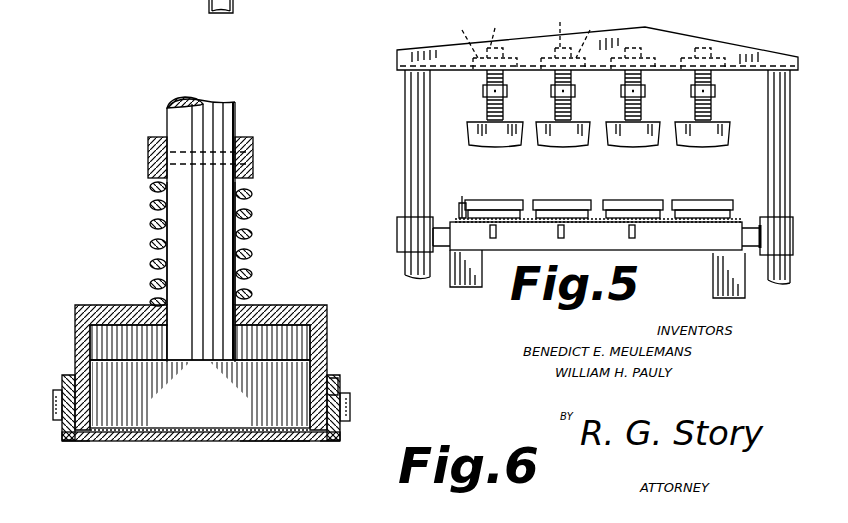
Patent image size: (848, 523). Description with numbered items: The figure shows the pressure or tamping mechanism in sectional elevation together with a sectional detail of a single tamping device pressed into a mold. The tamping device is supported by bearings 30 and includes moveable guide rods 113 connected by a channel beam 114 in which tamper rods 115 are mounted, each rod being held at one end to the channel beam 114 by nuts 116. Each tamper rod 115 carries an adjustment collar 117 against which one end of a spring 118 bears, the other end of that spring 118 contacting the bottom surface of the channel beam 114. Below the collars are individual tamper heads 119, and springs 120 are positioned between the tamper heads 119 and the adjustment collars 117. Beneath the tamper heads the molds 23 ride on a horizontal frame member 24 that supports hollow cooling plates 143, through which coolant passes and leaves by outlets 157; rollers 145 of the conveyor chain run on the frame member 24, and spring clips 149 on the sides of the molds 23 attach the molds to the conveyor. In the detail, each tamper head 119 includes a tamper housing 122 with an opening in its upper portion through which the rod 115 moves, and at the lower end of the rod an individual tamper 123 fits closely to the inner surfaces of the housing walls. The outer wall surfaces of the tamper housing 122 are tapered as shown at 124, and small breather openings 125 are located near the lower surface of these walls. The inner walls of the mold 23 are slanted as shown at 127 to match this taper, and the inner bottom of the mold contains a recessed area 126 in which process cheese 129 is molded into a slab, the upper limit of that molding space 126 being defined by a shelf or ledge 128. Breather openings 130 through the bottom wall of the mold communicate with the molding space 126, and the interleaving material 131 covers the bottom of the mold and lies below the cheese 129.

In FIG. 6, the mold 23 is at (341, 434).
In FIG. 5, the mold 23 is at (568, 200).
In FIG. 5, the horizontal frame member 24 is at (740, 238).
In FIG. 5, the bearings 30 is at (397, 233).
In FIG. 5, the moveable guide rods 113 is at (405, 150).
In FIG. 5, the channel beam 114 is at (735, 44).
In FIG. 6, the tamper rods 115 is at (235, 101).
In FIG. 5, the tamper rods 115 is at (535, 24).
In FIG. 5, the nuts 116 is at (581, 36).
In FIG. 6, the adjustment collars 117 is at (254, 146).
In FIG. 5, the adjustment collars 117 is at (508, 90).
In FIG. 5, the springs 118 is at (486, 78).
In FIG. 5, the tamper heads 119 is at (478, 147).
In FIG. 6, the springs 120 is at (253, 236).
In FIG. 5, the springs 120 is at (486, 106).
In FIG. 6, the tamper housing 122 is at (284, 306).
In FIG. 6, the individual tamper 123 is at (204, 380).
In FIG. 6, the taper 124 is at (341, 377).
In FIG. 6, the breather openings 125 is at (62, 430).
In FIG. 6, the recessed area 126 is at (330, 443).
In FIG. 6, the slanted inner surface walls 127 is at (341, 390).
In FIG. 6, the shelf or ledge 128 is at (80, 441).
In FIG. 6, the process cheese 129 is at (255, 441).
In FIG. 6, the breather openings 130 is at (108, 441).
In FIG. 6, the interleaving material 131 is at (280, 442).
In FIG. 5, the hollow cooling plates 143 is at (500, 200).
In FIG. 5, the rollers 145 is at (462, 200).
In FIG. 6, the spring clips 149 is at (351, 407).
In FIG. 5, the outlets 157 is at (497, 236).